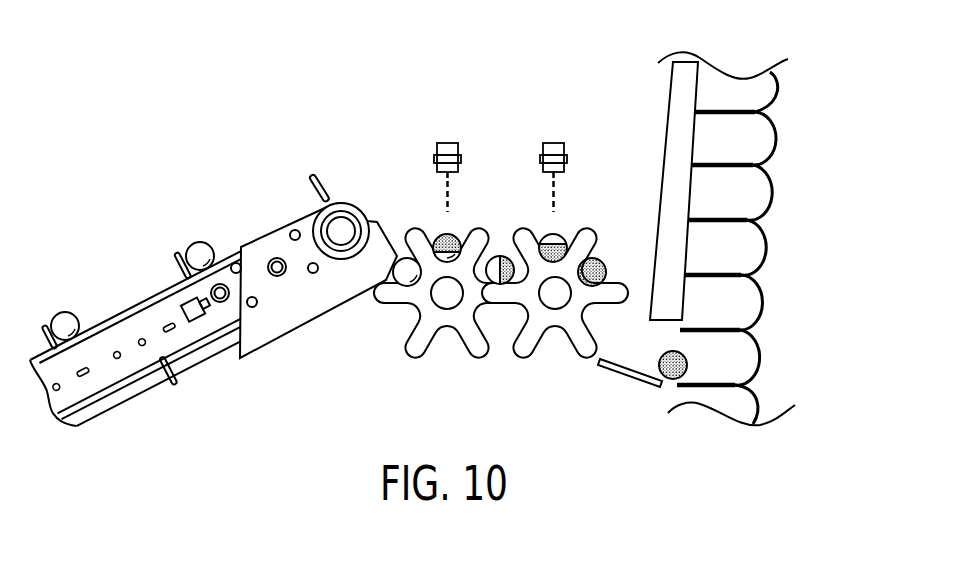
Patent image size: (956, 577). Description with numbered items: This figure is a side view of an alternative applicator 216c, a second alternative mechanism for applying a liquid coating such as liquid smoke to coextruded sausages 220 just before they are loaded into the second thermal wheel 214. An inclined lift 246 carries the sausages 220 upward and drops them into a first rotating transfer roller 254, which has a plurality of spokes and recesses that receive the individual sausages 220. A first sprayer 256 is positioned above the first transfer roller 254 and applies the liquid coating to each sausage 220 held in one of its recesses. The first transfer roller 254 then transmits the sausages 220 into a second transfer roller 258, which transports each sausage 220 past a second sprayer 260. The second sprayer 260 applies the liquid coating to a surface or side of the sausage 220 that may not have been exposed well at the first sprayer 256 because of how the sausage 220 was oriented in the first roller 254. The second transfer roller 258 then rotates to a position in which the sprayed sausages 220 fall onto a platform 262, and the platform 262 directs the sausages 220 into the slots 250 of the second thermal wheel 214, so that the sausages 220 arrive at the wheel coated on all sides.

The second thermal wheel 214 is at (645, 73).
The alternative applicator 216c is at (455, 124).
The sausages 220 is at (67, 322).
The inclined lift 246 is at (117, 375).
The slots 250 is at (738, 350).
The first rotating transfer roller 254 is at (410, 357).
The first sprayer 256 is at (437, 147).
The second transfer roller 258 is at (537, 323).
The second sprayer 260 is at (543, 147).
The platform 262 is at (627, 375).